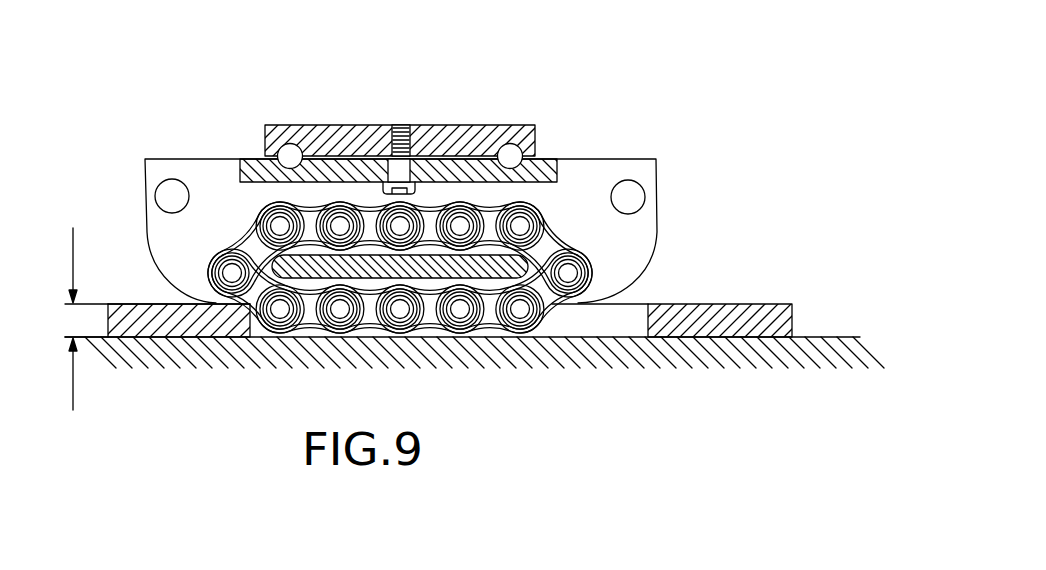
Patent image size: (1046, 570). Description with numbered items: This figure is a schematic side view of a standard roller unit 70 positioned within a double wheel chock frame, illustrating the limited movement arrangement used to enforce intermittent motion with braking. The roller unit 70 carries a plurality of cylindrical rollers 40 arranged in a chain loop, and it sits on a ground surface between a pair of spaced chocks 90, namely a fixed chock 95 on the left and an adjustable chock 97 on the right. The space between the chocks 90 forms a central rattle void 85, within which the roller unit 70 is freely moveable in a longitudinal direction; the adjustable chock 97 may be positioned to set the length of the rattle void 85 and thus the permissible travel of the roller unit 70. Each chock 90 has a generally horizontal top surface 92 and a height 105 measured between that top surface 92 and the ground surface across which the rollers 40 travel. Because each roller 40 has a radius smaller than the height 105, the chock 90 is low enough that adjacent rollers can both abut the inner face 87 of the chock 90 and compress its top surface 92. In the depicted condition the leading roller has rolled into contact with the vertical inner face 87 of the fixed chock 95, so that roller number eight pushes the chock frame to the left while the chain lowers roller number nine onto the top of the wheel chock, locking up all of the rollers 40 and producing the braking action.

The roller unit 70 is at (631, 80).
The roller 40 is at (548, 316).
The inner face 87 is at (252, 328).
The chock 90 is at (814, 279).
The top surface 92 is at (154, 303).
The fixed chock 95 is at (170, 324).
The height 105 is at (82, 319).
The rattle void 85 is at (627, 313).
The adjustable chock 97 is at (738, 305).